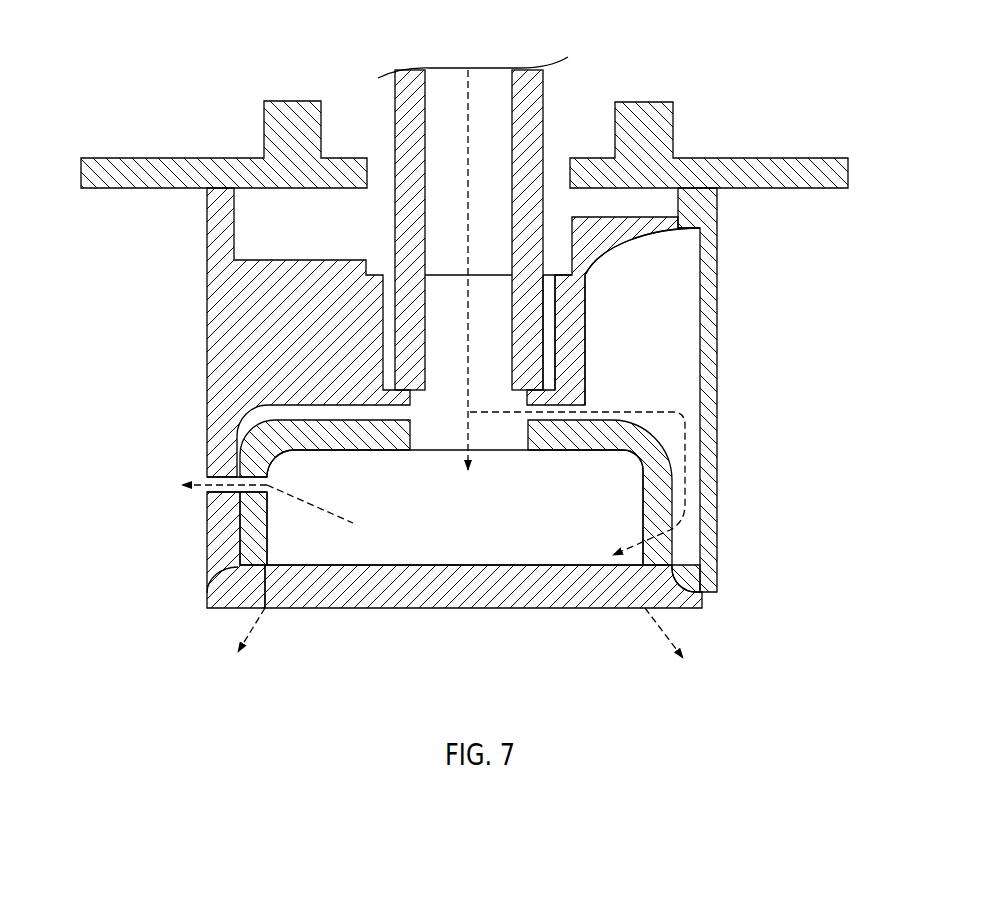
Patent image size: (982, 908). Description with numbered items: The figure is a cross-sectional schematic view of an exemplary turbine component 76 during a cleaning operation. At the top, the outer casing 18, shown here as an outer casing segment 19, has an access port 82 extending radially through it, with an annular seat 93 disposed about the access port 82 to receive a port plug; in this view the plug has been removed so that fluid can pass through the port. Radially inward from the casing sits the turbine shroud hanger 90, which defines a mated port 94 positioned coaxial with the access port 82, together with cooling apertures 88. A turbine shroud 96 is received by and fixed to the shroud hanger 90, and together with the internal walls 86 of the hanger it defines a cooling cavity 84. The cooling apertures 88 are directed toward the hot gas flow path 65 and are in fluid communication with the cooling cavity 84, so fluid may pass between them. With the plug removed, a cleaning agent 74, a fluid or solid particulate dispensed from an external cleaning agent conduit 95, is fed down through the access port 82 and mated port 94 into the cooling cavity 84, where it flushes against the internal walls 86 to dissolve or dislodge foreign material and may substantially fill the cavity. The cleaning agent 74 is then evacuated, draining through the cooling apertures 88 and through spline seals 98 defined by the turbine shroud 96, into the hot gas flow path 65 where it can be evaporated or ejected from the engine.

The outer casing 18 is at (709, 102).
The outer casing segment 19 is at (709, 102).
The hot gas flow path 65 is at (464, 337).
The cleaning agent 74 is at (468, 105).
The turbine component 76 is at (204, 395).
The access port 82 is at (377, 175).
The cooling cavity 84 is at (670, 380).
The internal walls 86 is at (700, 333).
The cooling apertures 88 is at (245, 487).
The turbine shroud hanger 90 is at (707, 279).
The annular seat 93 is at (581, 157).
The mated port 94 is at (560, 316).
The external cleaning agent conduit 95 is at (527, 83).
The turbine shroud 96 is at (652, 463).
The spline seals 98 is at (266, 609).